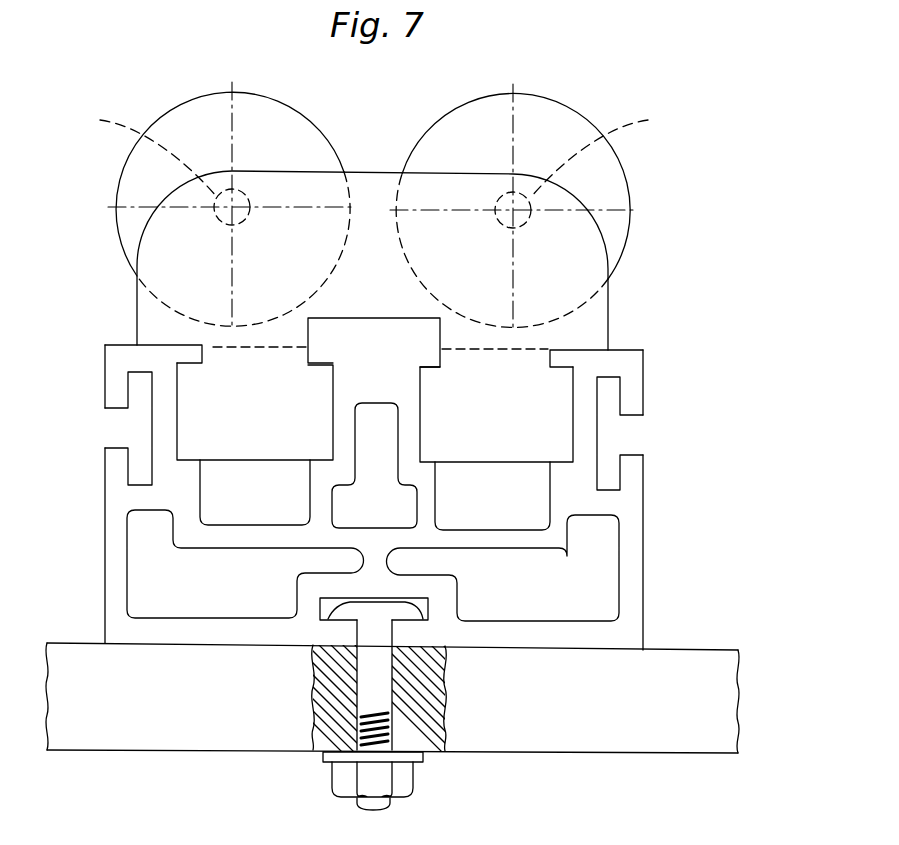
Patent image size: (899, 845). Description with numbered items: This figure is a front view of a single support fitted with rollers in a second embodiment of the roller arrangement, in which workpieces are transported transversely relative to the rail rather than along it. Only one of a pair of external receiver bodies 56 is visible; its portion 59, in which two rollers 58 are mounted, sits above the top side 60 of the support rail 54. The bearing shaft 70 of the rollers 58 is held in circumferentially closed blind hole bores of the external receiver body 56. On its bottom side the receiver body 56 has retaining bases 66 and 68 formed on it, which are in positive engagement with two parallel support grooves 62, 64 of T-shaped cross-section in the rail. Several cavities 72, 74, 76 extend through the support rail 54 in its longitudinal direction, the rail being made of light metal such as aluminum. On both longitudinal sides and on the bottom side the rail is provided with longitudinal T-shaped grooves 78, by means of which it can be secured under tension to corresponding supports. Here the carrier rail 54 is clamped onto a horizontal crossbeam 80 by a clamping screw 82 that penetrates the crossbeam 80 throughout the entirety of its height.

The support rail 54 is at (377, 507).
The external receiver body 56 is at (408, 260).
The rollers 58 is at (487, 112).
The portion of the external receiver body 59 is at (568, 243).
The top side of the support rail 60 is at (626, 347).
The support groove 62 is at (420, 407).
The support groove 64 is at (177, 395).
The retaining base 66 is at (547, 428).
The retaining base 68 is at (307, 433).
The bearing shaft 70 is at (378, 152).
The cavity 72 is at (587, 595).
The cavity 74 is at (152, 585).
The cavity 76 is at (387, 512).
The T-shaped grooves 78 is at (138, 431).
The horizontal crossbeam 80 is at (695, 662).
The clamping screw 82 is at (377, 683).